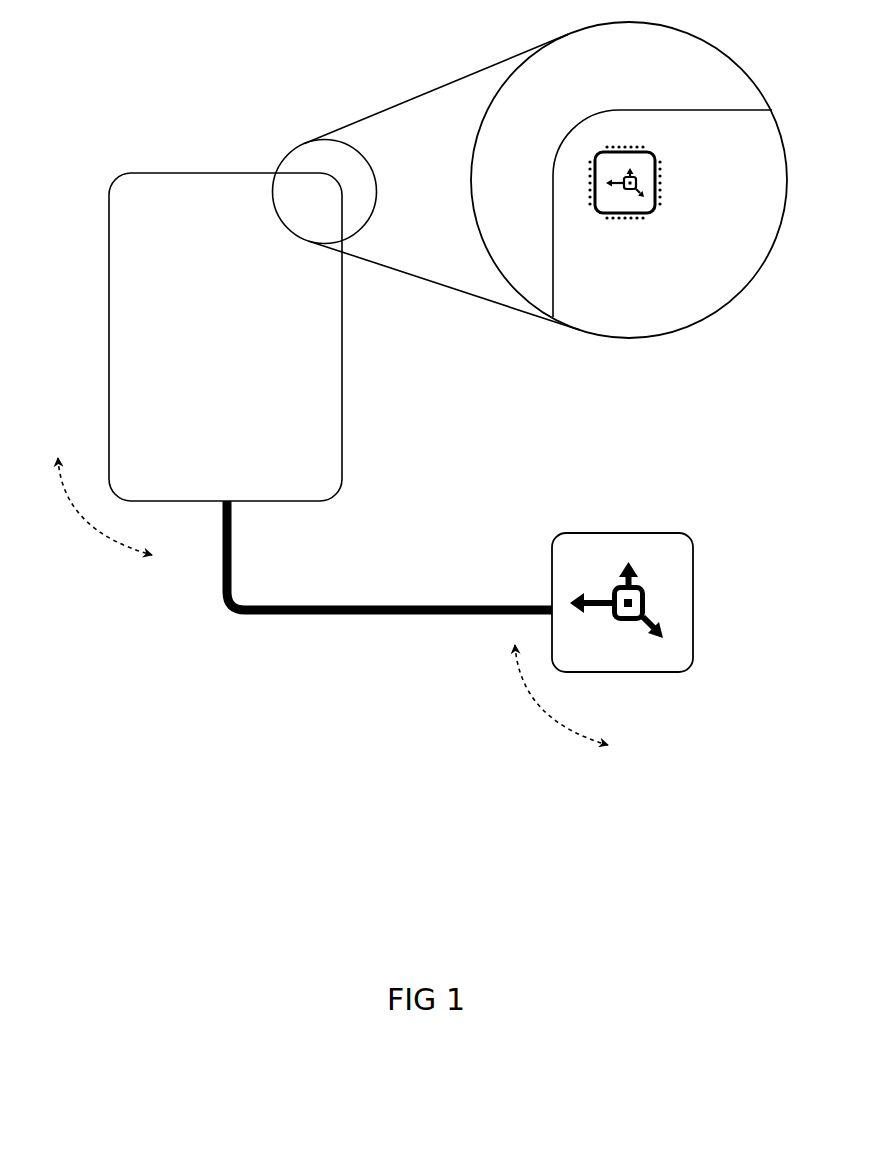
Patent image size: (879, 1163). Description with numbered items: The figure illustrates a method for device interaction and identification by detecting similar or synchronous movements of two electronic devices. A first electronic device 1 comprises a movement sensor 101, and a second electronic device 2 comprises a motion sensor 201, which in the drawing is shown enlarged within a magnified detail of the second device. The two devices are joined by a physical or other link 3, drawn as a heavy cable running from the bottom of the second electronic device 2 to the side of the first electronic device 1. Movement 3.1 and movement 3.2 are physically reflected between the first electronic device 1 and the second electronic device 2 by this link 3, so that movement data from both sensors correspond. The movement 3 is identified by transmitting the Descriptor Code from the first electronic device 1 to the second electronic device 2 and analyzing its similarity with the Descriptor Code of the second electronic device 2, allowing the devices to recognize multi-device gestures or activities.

The first electronic device 1 is at (582, 560).
The movement sensor 101 is at (644, 560).
The second electronic device 2 is at (134, 203).
The motion sensor 201 is at (606, 165).
The physical or other link 3 is at (441, 588).
The movement 3.1 is at (555, 696).
The movement 3.2 is at (100, 507).